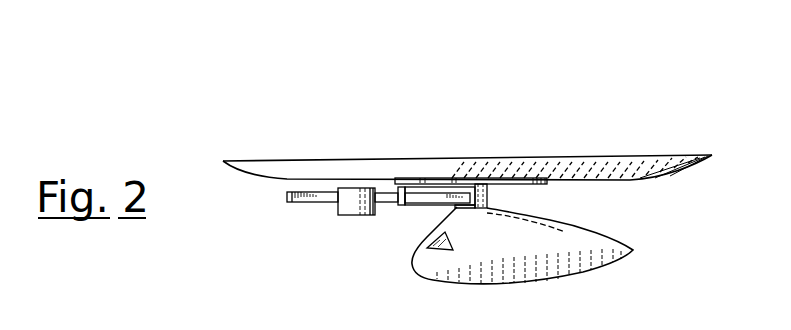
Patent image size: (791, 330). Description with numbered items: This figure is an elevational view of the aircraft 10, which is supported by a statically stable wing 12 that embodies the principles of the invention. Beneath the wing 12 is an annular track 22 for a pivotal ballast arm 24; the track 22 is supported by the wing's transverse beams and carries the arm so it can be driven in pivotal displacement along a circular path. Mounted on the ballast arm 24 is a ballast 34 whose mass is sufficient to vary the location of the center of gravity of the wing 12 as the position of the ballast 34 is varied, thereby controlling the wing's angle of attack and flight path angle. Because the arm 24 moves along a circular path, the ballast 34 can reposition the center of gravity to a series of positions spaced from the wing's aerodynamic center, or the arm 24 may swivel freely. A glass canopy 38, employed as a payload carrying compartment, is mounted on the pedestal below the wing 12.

The aircraft 10 is at (352, 92).
The wing 12 is at (223, 162).
The annular track 22 is at (537, 185).
The ballast arm 24 is at (296, 203).
The ballast 34 is at (360, 215).
The glass canopy 38 is at (570, 273).